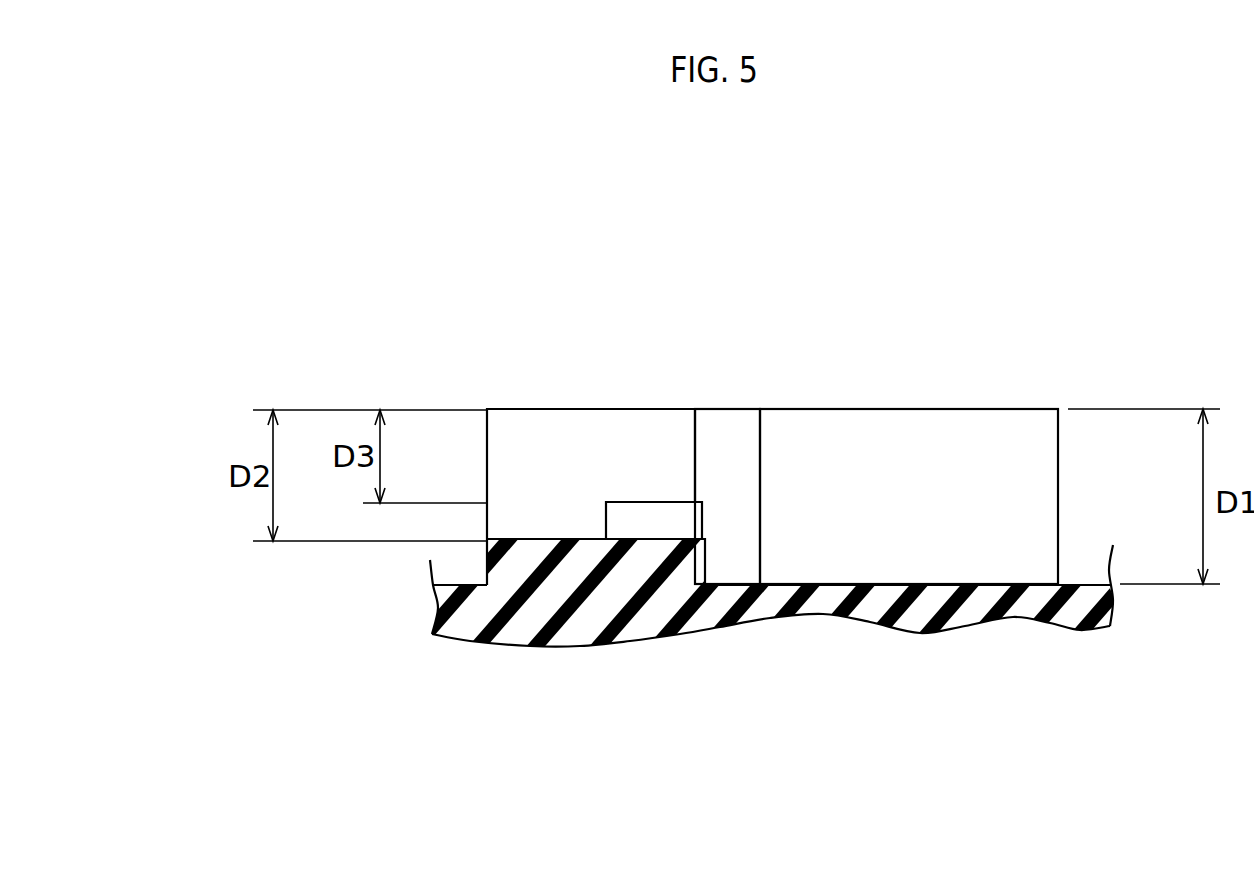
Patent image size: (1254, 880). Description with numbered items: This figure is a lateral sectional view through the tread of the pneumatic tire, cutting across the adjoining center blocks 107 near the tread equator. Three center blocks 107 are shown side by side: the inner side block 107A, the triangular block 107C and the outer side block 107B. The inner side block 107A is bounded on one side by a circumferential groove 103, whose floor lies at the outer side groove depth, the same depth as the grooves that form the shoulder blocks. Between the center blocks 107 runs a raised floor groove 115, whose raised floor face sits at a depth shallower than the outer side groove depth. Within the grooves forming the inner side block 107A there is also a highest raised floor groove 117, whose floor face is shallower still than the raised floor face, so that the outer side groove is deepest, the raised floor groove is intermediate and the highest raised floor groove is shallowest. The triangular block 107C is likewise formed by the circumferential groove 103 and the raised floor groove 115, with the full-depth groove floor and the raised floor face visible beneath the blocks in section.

The circumferential groove 103 is at (458, 585).
The center block 107 is at (800, 386).
The inner side block 107A is at (593, 409).
The outer side block 107B is at (950, 408).
The triangular block 107C is at (732, 409).
The raised floor groove 115 is at (530, 539).
The highest raised floor groove 117 is at (643, 502).